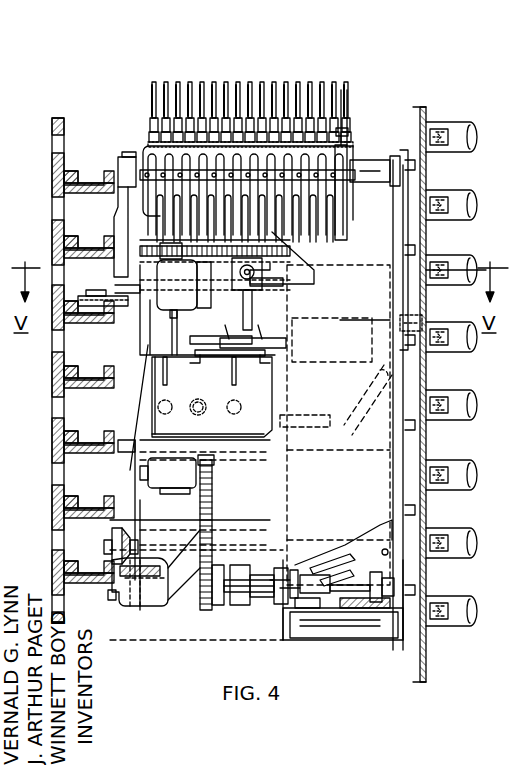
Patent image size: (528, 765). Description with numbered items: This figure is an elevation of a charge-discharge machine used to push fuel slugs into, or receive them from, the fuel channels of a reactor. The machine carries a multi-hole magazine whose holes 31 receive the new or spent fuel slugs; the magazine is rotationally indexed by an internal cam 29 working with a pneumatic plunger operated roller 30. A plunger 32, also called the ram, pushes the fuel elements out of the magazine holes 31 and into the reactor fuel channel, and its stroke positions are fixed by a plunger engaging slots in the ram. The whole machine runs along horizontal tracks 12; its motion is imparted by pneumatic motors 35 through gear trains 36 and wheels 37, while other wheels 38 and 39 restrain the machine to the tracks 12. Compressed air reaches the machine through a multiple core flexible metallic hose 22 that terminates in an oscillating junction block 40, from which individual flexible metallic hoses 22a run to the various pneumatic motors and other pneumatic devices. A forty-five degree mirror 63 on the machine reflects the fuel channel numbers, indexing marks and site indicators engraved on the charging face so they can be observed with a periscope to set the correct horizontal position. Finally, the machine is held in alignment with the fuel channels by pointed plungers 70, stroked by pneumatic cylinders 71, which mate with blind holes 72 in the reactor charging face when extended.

The horizontal tracks 12 is at (86, 187).
The multiple core flexible metallic hose 22 is at (152, 96).
The individual flexible metallic hoses 22a is at (342, 160).
The internal cam 29 is at (393, 568).
The pneumatic plunger operated roller 30 is at (288, 614).
The holes 31 is at (334, 636).
The plunger 32 is at (89, 241).
The pneumatic motors 35 is at (182, 483).
The gear trains 36 is at (206, 610).
The wheels 37 is at (112, 605).
The wheels 38 is at (90, 322).
The wheels 39 is at (145, 600).
The oscillating junction block 40 is at (142, 152).
The 45° mirrors 63 is at (173, 396).
The pointed plungers 70 is at (418, 324).
The pneumatic cylinders 71 is at (218, 334).
The blind holes 72 is at (436, 393).